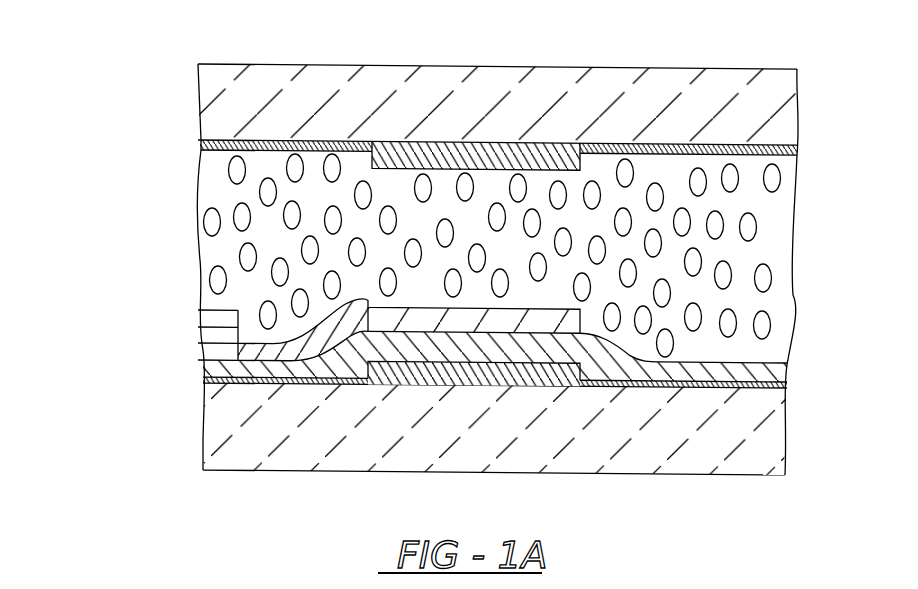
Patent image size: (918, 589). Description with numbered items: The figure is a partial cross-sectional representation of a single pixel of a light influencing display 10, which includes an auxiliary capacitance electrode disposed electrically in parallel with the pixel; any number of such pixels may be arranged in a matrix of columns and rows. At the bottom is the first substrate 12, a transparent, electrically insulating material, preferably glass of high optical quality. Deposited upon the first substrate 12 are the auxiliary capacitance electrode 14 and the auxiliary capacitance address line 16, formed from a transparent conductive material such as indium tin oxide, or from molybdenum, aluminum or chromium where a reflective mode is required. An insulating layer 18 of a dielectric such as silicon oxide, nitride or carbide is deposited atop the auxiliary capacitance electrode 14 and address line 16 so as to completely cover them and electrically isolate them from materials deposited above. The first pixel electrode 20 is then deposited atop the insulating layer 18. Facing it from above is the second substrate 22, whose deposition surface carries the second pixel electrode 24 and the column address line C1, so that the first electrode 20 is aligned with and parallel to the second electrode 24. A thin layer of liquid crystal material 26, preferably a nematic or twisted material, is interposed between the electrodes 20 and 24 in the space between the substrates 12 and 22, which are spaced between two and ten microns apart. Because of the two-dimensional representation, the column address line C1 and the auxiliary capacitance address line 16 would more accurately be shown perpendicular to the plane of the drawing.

The light influencing display 10 is at (132, 121).
The first substrate 12 is at (212, 432).
The auxiliary capacitance electrode 14 is at (428, 370).
The auxiliary capacitance address line 16 is at (789, 382).
The insulating layer 18 is at (208, 365).
The first pixel electrode 20 is at (565, 322).
The second substrate 22 is at (597, 95).
The second pixel electrode 24 is at (575, 169).
The liquid crystal material 26 is at (215, 248).
The column address line C1 is at (799, 150).